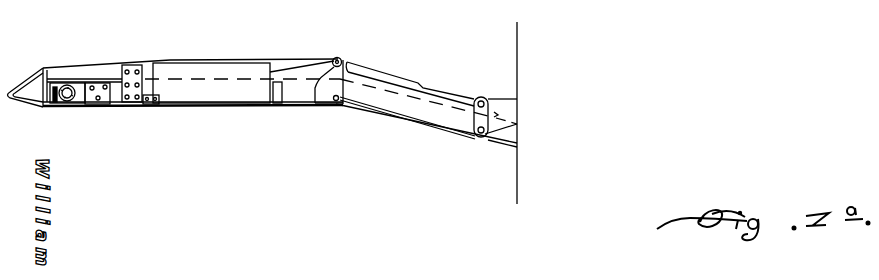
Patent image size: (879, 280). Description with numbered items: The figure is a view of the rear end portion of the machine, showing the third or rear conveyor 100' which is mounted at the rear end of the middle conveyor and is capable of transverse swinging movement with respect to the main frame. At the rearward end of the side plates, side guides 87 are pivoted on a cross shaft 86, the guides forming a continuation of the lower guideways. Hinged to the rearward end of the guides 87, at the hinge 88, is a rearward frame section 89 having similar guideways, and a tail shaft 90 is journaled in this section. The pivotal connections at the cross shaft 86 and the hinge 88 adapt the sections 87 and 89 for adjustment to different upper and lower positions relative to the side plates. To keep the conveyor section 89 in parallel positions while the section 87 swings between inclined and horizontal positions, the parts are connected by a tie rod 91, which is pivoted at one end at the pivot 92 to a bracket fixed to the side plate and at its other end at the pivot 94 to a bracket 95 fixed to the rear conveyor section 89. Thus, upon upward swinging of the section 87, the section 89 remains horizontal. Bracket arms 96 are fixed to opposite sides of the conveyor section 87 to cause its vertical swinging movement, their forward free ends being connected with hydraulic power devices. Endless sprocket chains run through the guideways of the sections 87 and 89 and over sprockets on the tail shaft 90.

The cross shaft 86 is at (478, 137).
The side guides 87 is at (412, 118).
The hinge 88 is at (334, 100).
The rearward frame section 89 is at (203, 103).
The tail shaft 90 is at (68, 103).
The tie rod 91 is at (400, 86).
The pivot 92 is at (482, 97).
The pivot 94 is at (342, 62).
The bracket 95 is at (304, 71).
The bracket arms 96 is at (514, 97).
The rear conveyor 100' is at (176, 60).